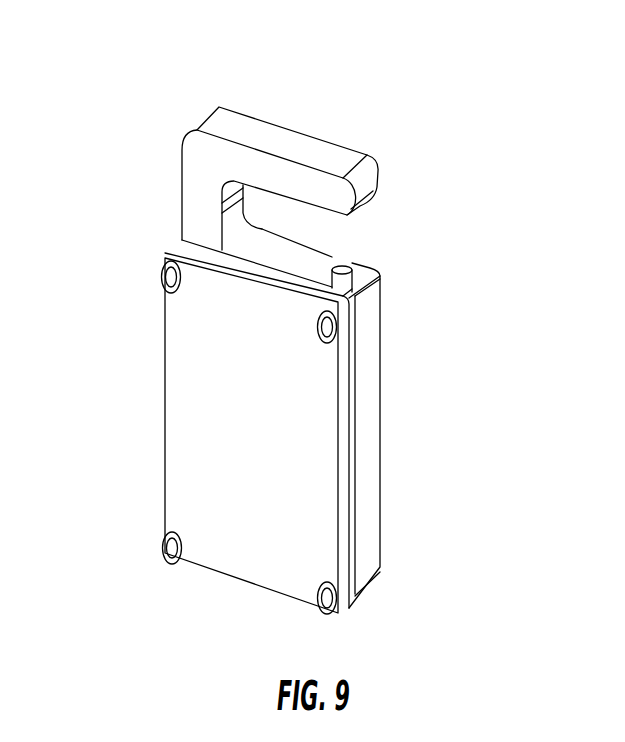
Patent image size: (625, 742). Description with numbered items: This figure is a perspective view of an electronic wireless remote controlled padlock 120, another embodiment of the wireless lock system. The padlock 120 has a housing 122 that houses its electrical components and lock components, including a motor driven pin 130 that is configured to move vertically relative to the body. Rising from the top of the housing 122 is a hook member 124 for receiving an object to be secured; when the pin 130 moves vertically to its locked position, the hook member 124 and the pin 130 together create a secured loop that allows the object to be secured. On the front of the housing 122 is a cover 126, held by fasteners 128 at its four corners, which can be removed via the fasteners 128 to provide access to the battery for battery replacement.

The electronic wireless remote controlled padlock 120 is at (355, 71).
The housing 122 is at (394, 481).
The hook member 124 is at (262, 120).
The cover 126 is at (184, 442).
The fasteners 128 is at (162, 273).
The motor driven pin 130 is at (369, 244).